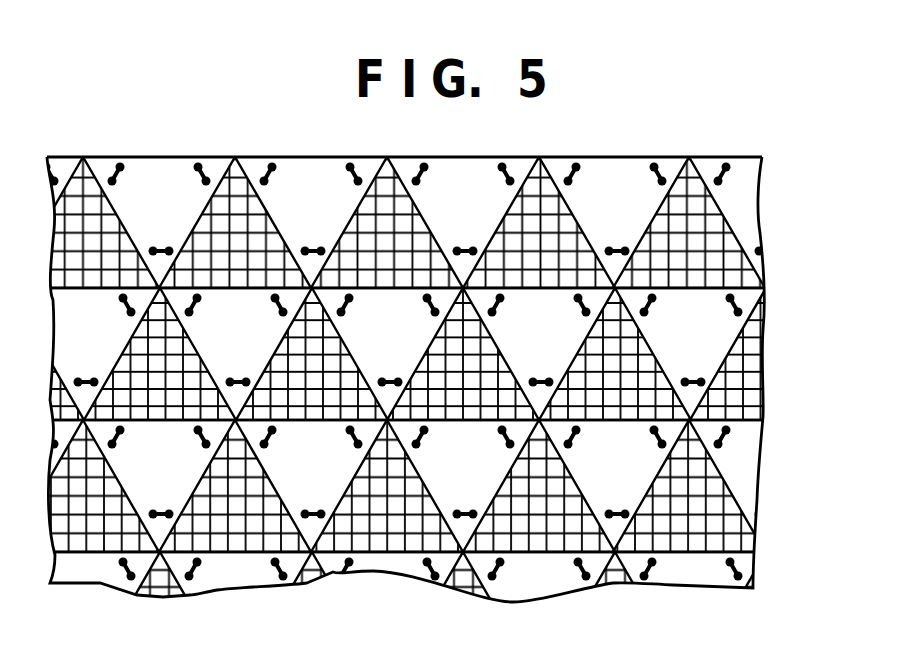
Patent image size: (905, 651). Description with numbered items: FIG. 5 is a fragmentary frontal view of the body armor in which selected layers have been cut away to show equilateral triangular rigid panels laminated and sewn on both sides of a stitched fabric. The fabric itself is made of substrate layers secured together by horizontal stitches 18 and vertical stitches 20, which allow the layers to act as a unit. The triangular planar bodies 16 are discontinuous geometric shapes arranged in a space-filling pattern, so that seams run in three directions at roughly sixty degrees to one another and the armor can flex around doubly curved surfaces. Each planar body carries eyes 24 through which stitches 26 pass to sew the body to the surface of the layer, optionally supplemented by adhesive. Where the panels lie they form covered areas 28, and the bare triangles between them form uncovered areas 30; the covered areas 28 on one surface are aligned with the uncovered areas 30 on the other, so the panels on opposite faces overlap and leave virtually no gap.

The planar bodies 16 is at (743, 162).
The horizontal stitches 18 is at (745, 521).
The vertical stitches 20 is at (227, 543).
The eyes 24 is at (268, 173).
The stitches 26 is at (112, 172).
The covered areas 28 is at (463, 157).
The uncovered areas 30 is at (745, 382).